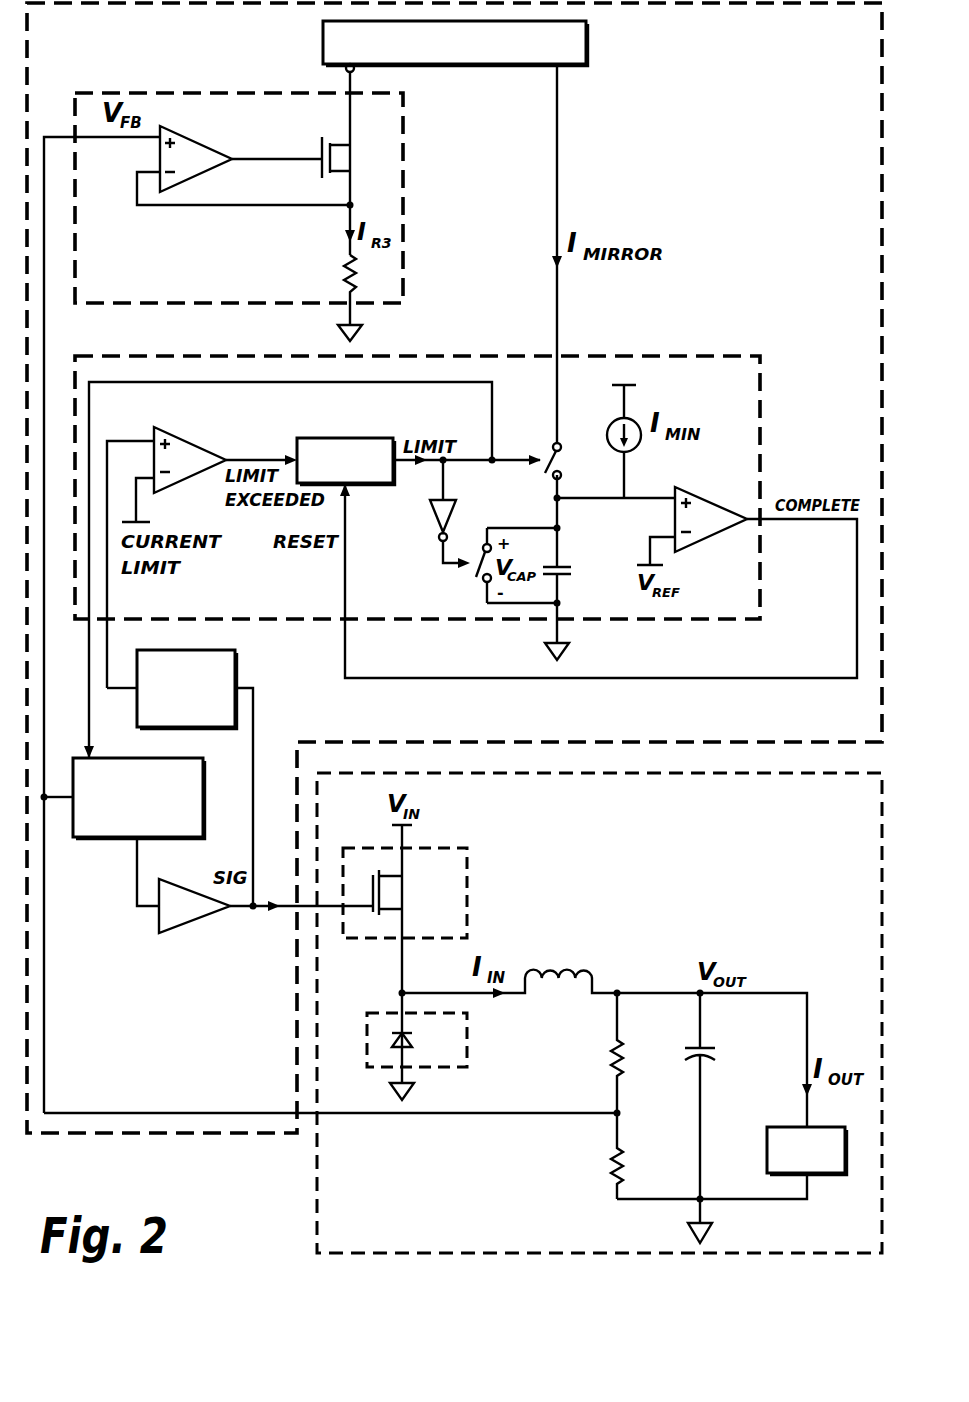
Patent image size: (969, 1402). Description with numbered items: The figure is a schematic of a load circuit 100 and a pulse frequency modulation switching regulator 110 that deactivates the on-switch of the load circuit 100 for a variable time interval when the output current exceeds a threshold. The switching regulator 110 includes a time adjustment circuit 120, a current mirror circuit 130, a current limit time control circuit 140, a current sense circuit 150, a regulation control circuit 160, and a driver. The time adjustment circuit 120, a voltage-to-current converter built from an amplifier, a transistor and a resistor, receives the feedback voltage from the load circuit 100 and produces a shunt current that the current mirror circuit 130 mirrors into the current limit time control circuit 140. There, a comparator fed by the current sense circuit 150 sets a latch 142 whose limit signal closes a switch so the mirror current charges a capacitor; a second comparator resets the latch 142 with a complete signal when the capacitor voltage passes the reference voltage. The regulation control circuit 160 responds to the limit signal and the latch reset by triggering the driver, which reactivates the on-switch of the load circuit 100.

The load circuit 100 is at (316, 1154).
The pulse frequency modulation switching regulator 110 is at (133, 1134).
The time adjustment circuit 120 is at (137, 92).
The current mirror circuit 130 is at (457, 64).
The current limit time control circuit 140 is at (708, 358).
The latch 142 is at (348, 438).
The current sense circuit 150 is at (235, 664).
The regulation control circuit 160 is at (113, 838).